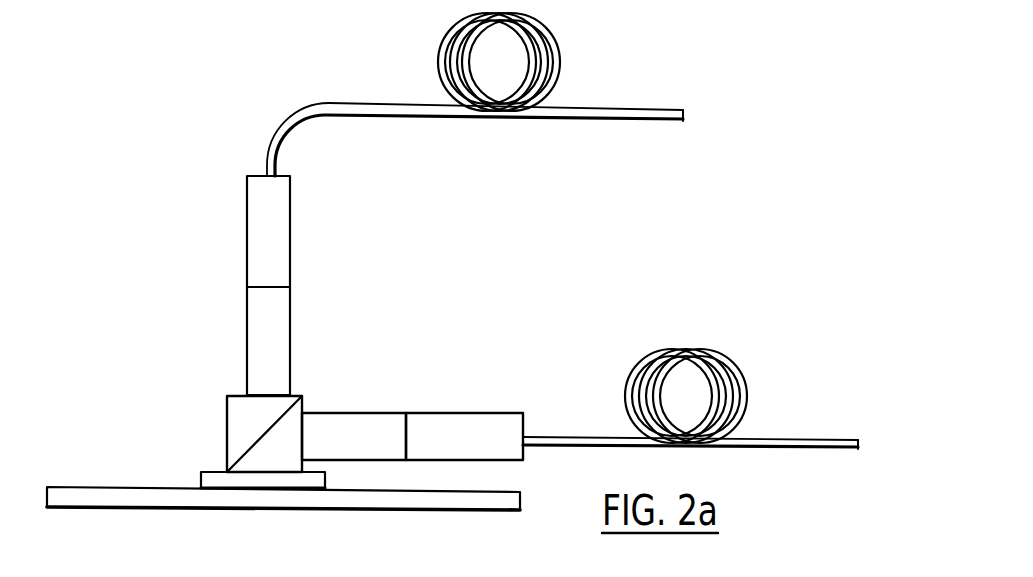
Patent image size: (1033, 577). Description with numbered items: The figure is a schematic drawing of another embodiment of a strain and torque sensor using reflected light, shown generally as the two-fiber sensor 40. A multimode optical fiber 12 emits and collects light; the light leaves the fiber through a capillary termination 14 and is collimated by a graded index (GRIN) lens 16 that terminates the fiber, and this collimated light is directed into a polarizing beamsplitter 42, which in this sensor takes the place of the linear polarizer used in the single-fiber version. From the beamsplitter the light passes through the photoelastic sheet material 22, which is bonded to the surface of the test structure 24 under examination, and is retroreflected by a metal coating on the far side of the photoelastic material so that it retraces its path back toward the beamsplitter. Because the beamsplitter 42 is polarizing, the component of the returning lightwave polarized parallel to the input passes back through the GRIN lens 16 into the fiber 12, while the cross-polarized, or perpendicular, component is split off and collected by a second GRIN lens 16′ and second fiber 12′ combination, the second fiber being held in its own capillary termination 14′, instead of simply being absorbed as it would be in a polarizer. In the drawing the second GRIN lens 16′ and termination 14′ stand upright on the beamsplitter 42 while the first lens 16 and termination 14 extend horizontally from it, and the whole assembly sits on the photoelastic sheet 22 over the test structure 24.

The multimode optical fiber 12 is at (797, 440).
The second optical fiber 12′ is at (615, 108).
The capillary termination 14 is at (463, 413).
The second capillary termination 14′ is at (247, 226).
The graded index (GRIN) lens 16 is at (350, 413).
The second GRIN lens 16′ is at (247, 344).
The photoelastic sheet material 22 is at (201, 478).
The test structure 24 is at (357, 512).
The two-fiber sensor 40 is at (158, 202).
The polarizing beamsplitter 42 is at (227, 425).